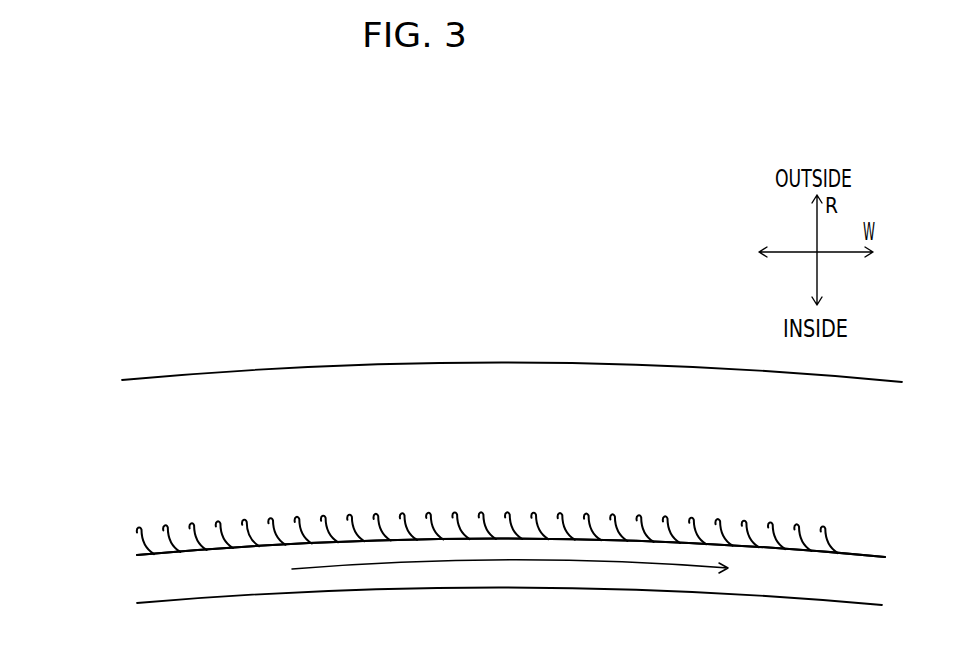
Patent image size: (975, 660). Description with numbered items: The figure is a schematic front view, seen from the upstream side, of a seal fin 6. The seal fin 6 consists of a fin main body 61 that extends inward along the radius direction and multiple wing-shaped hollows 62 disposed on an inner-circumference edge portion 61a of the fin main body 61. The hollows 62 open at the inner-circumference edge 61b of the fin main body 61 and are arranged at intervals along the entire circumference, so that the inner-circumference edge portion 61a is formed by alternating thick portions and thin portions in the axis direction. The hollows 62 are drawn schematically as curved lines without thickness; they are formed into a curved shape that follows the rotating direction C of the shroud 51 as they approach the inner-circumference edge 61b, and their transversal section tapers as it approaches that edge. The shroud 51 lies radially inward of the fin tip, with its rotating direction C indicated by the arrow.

The seal fin 6 is at (546, 341).
The fin main body 61 is at (697, 386).
The inner-circumference edge portion 61a is at (125, 535).
The inner-circumference edge 61b is at (165, 556).
The wing-shaped hollows 62 is at (141, 527).
The shroud 51 is at (822, 600).
The rotating direction C is at (297, 569).